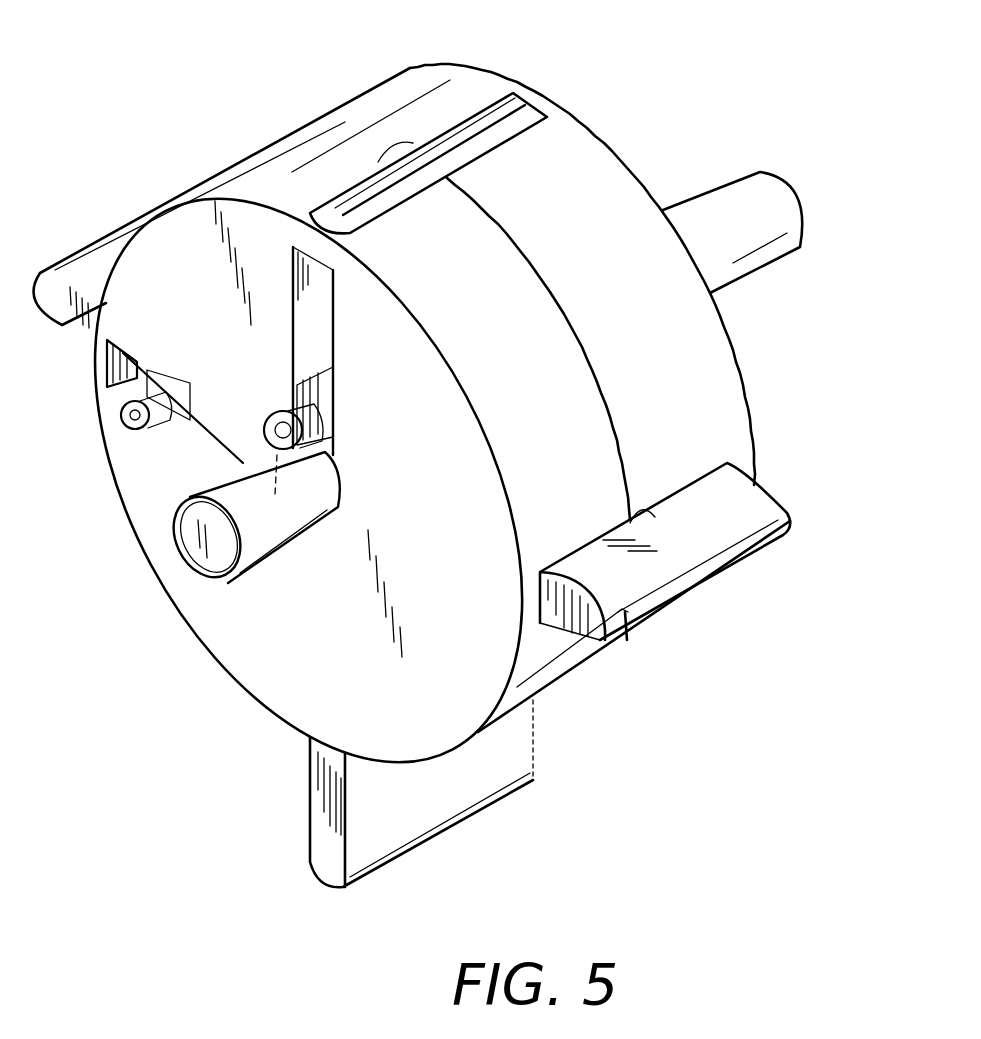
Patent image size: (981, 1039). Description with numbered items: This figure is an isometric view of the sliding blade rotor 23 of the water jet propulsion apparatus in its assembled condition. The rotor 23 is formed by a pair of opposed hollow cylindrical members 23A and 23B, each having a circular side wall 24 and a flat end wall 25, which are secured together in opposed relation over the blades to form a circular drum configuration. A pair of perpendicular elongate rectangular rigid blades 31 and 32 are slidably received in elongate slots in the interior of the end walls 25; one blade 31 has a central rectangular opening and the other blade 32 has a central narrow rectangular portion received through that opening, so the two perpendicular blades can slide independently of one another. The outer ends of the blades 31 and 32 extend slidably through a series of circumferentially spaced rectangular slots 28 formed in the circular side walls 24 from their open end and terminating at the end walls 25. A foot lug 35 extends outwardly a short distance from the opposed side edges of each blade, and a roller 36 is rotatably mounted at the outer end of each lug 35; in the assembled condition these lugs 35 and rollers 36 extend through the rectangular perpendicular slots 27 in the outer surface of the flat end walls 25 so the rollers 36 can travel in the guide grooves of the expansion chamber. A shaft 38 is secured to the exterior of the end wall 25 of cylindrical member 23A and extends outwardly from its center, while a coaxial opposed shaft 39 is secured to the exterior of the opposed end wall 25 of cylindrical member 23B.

The sliding blade rotor 23 is at (672, 162).
The hollow cylindrical member 23A is at (267, 181).
The hollow cylindrical member 23B is at (478, 100).
The circular side wall 24 is at (657, 622).
The end wall 25 is at (665, 205).
The rectangular perpendicular slot 27 is at (233, 428).
The rectangular slot 28 is at (400, 153).
The rigid blade 31 is at (403, 823).
The rigid blade 32 is at (748, 498).
The foot lug 35 is at (178, 424).
The roller 36 is at (145, 430).
The shaft 38 is at (263, 527).
The shaft 39 is at (783, 208).